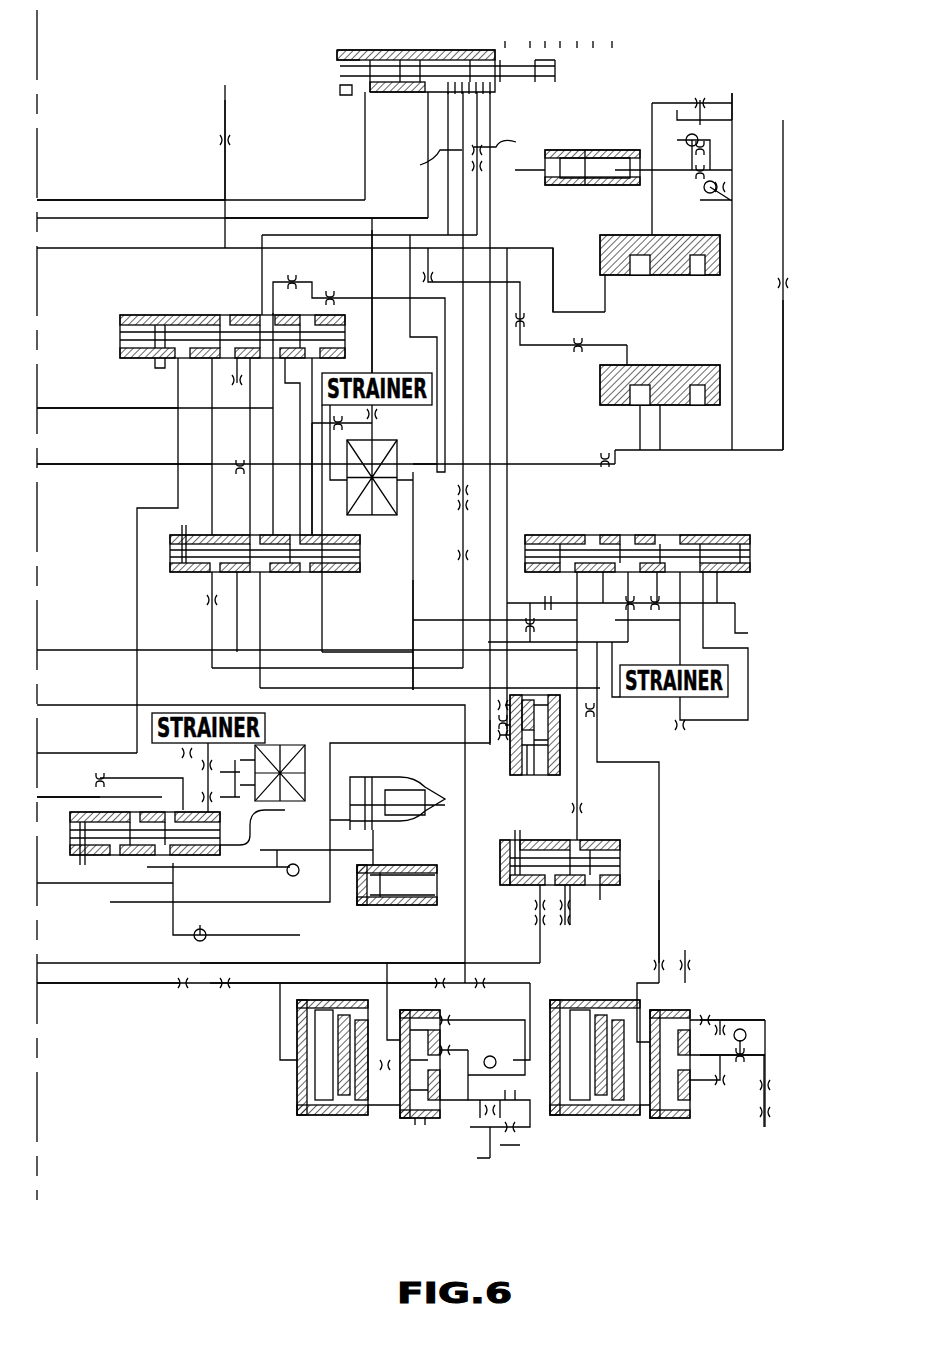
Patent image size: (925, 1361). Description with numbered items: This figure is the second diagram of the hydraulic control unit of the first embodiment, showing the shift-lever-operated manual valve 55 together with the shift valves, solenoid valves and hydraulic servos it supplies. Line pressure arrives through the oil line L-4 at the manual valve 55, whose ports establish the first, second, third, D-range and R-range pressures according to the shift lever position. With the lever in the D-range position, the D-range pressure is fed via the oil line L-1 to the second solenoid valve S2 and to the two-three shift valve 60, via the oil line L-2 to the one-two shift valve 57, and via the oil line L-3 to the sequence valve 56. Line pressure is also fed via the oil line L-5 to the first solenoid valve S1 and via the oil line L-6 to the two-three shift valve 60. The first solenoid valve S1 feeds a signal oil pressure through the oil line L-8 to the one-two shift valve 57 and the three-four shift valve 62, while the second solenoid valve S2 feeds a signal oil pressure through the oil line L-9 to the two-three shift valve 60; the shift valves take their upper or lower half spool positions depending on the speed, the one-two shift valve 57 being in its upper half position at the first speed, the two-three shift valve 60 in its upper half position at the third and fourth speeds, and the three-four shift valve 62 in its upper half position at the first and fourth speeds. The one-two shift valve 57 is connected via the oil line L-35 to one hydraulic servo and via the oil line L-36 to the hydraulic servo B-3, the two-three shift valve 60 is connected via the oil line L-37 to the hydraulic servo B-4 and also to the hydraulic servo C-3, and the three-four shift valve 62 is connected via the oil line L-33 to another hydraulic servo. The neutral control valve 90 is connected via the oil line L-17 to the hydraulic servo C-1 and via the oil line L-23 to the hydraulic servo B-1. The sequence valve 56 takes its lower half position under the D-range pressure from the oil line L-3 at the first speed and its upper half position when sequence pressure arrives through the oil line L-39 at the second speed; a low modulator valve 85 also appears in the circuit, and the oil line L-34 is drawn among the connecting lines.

The manual valve 55 is at (412, 50).
The 1-2 shift valve 57 is at (153, 315).
The 3-4 shift valve 62 is at (192, 574).
The neutral control valve 90 is at (747, 528).
The low modulator valve 85 is at (519, 767).
The B-1 sequence valve 56 is at (620, 865).
The 2-3 shift valve 60 is at (100, 858).
The first solenoid valve S1 is at (384, 466).
The second solenoid valve S2 is at (280, 758).
The hydraulic servo B-4 is at (397, 841).
The hydraulic servo B-3 is at (225, 133).
The hydraulic servo B-1 is at (673, 1096).
The hydraulic servo C-1 is at (732, 73).
The hydraulic servo C-3 is at (393, 1095).
The oil line L-1 is at (413, 605).
The oil line L-2 is at (307, 218).
The oil line L-3 is at (432, 618).
The oil line L-4 is at (125, 200).
The oil line L-5 is at (372, 276).
The oil line L-6 is at (67, 787).
The oil line L-8 is at (312, 425).
The oil line L-9 is at (257, 845).
The oil line L-17 is at (732, 340).
The oil line L-23 is at (660, 895).
The oil line L-33 is at (80, 473).
The oil line L-34 is at (307, 962).
The oil line L-35 is at (82, 408).
The oil line L-36 is at (227, 102).
The oil line L-37 is at (235, 870).
The oil line L-39 is at (108, 984).